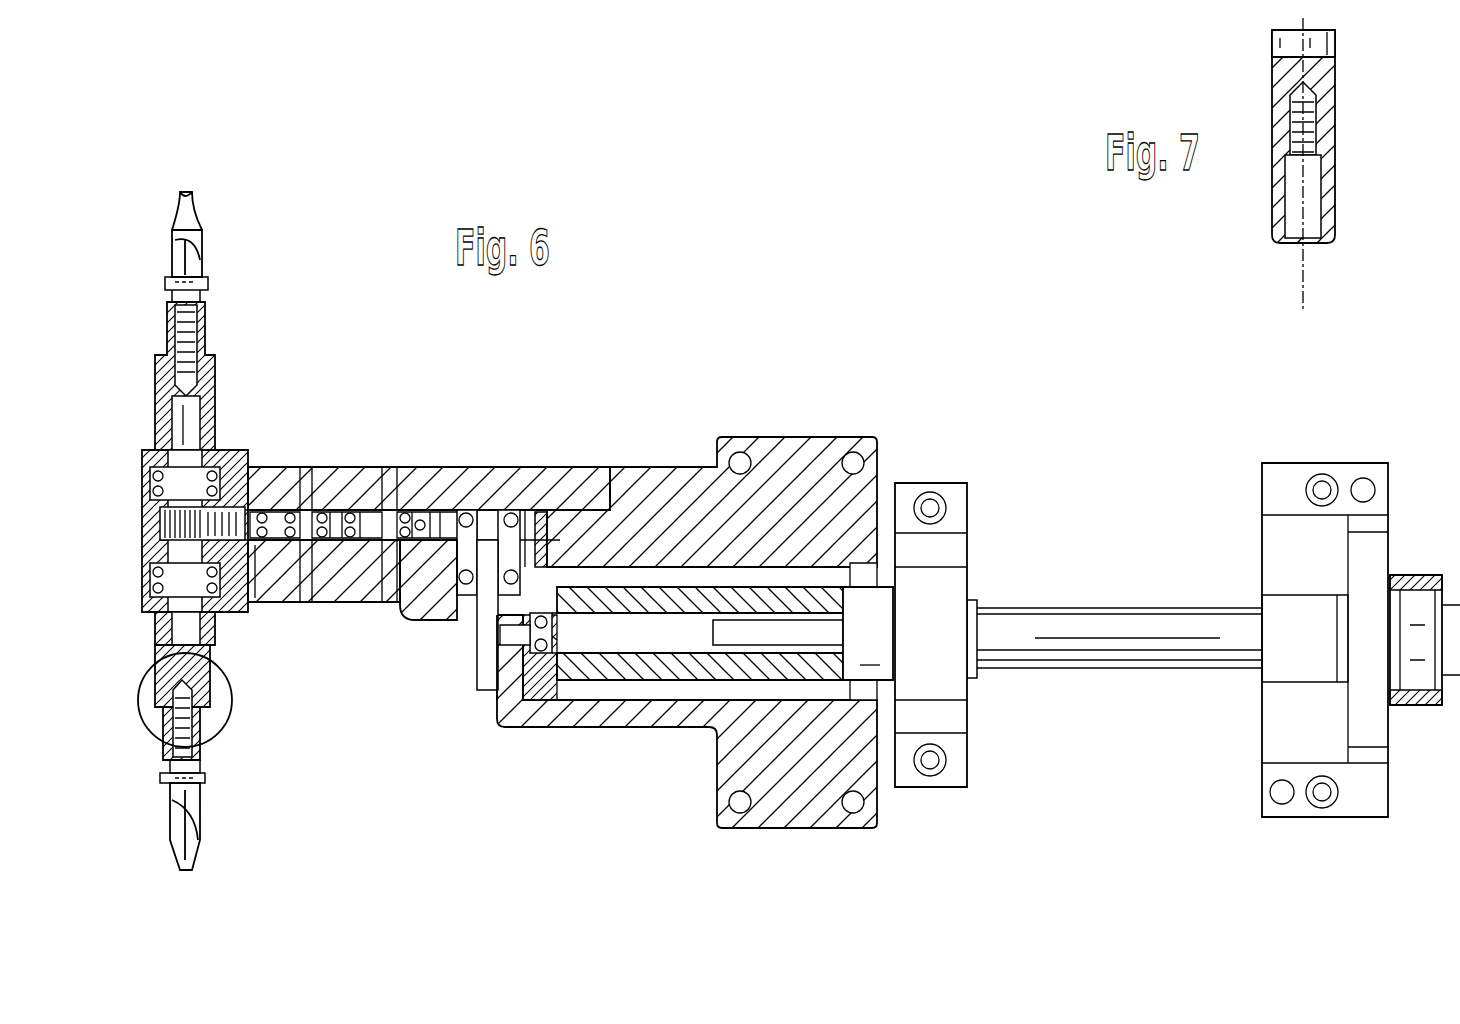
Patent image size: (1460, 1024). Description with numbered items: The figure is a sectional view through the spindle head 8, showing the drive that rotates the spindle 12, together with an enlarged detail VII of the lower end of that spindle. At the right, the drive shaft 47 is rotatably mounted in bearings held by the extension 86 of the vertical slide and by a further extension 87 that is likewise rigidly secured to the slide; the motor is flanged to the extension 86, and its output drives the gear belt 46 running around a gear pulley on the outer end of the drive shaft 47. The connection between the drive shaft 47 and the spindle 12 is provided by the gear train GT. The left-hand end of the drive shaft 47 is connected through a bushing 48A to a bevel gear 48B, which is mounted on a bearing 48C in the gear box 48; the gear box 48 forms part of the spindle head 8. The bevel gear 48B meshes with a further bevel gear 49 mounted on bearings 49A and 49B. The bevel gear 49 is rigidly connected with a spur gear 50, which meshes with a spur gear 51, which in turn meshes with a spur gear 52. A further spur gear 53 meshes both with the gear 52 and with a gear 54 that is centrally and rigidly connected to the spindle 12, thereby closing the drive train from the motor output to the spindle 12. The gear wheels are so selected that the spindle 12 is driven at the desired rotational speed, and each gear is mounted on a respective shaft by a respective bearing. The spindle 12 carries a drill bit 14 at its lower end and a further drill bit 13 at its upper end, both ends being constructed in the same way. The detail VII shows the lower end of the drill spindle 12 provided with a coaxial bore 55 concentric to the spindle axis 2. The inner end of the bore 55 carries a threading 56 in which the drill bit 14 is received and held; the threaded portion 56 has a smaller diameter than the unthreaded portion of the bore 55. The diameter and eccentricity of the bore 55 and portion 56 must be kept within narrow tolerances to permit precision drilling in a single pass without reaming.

In FIG. 6, the spindle head 8 is at (670, 498).
In FIG. 6, the gear train GT is at (478, 422).
In FIG. 6, the spur gear 53 is at (277, 463).
In FIG. 6, the spur gear 52 is at (352, 465).
In FIG. 6, the spur gear 51 is at (432, 467).
In FIG. 6, the spur gear 50 is at (557, 467).
In FIG. 6, the bevel gear 49 is at (410, 607).
In FIG. 6, the bearing 49A is at (458, 620).
In FIG. 6, the bearing 49B is at (515, 465).
In FIG. 6, the gear box 48 is at (512, 708).
In FIG. 6, the bushing 48A is at (608, 667).
In FIG. 6, the bevel gear 48B is at (541, 700).
In FIG. 6, the bearing 48C is at (552, 648).
In FIG. 6, the drive shaft 47 is at (1088, 620).
In FIG. 6, the extension 87 is at (967, 553).
In FIG. 6, the extension 86 is at (1287, 483).
In FIG. 6, the gear belt 46 is at (1425, 580).
In FIG. 6, the drill bit 13 is at (188, 262).
In FIG. 6, the spindle 12 is at (188, 418).
In FIG. 7, the spindle 12 is at (1325, 80).
In FIG. 6, the gear 54 is at (170, 520).
In FIG. 6, the detail VII is at (230, 710).
In FIG. 6, the drill bit 14 is at (190, 804).
In FIG. 7, the threading 56 is at (1318, 125).
In FIG. 7, the coaxial bore 55 is at (1310, 207).
In FIG. 7, the spindle axis 2 is at (1308, 285).